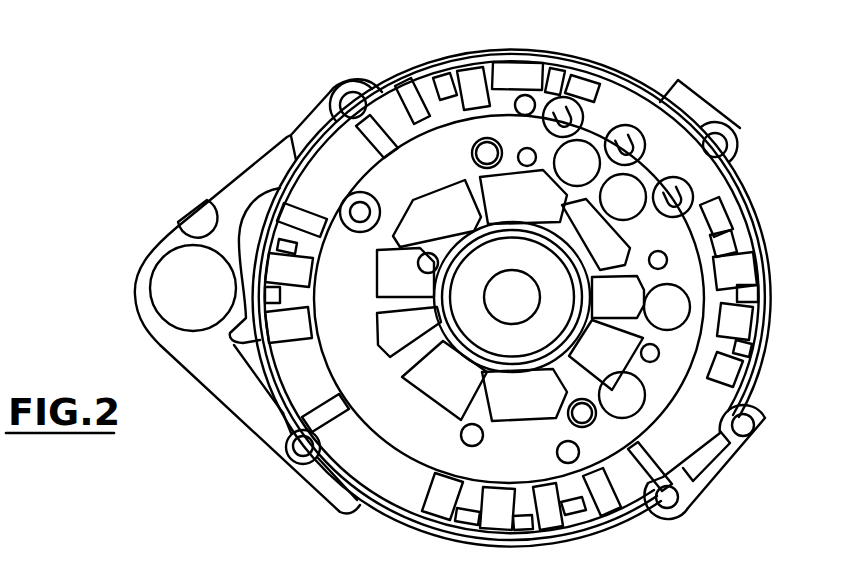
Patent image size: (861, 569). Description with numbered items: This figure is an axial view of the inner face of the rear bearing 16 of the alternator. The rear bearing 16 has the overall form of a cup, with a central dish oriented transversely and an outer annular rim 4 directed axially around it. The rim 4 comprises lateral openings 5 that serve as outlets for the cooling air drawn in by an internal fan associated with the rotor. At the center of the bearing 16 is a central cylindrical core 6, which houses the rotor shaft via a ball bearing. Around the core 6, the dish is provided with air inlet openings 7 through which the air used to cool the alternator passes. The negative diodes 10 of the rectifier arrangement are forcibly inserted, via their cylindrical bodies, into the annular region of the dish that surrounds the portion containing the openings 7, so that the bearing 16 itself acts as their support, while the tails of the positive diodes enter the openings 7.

The outer annular rim 4 is at (770, 348).
The lateral openings 5 is at (733, 213).
The central cylindrical core 6 is at (413, 387).
The air inlet openings 7 is at (510, 295).
The negative diodes 10 is at (583, 158).
The rear bearing 16 is at (303, 483).